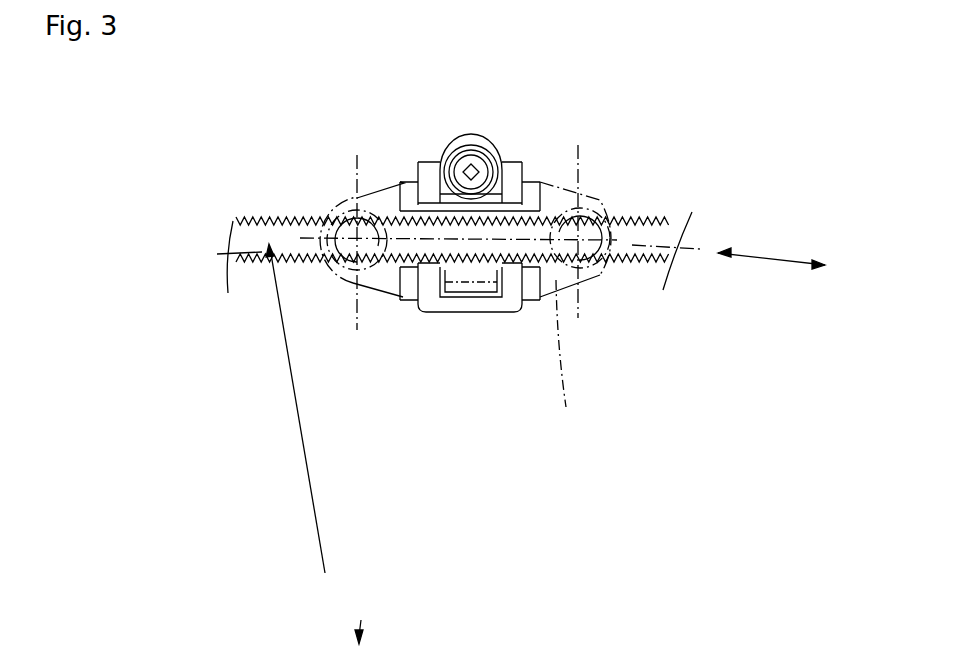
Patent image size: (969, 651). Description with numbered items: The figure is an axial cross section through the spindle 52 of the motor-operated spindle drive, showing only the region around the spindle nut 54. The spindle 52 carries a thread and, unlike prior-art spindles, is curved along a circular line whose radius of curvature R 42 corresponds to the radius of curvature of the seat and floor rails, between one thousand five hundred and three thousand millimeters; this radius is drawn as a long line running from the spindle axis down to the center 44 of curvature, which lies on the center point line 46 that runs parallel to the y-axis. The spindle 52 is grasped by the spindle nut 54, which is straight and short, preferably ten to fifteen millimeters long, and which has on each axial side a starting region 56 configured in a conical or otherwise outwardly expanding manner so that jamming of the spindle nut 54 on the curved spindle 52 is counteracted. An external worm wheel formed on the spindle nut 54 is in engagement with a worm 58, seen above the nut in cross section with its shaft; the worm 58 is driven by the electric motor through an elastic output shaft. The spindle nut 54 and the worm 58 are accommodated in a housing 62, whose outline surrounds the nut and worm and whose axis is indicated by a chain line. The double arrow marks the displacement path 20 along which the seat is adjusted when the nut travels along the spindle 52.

The displacement path 20 is at (762, 250).
The radius of curvature 42 is at (306, 436).
The center of curvature 44 is at (421, 614).
The center point line 46 is at (361, 620).
The spindle 52 is at (253, 217).
The spindle nut 54 is at (512, 188).
The starting region 56 is at (432, 158).
The worm 58 is at (476, 165).
The housing 62 is at (566, 361).
The radius of curvature R is at (293, 396).